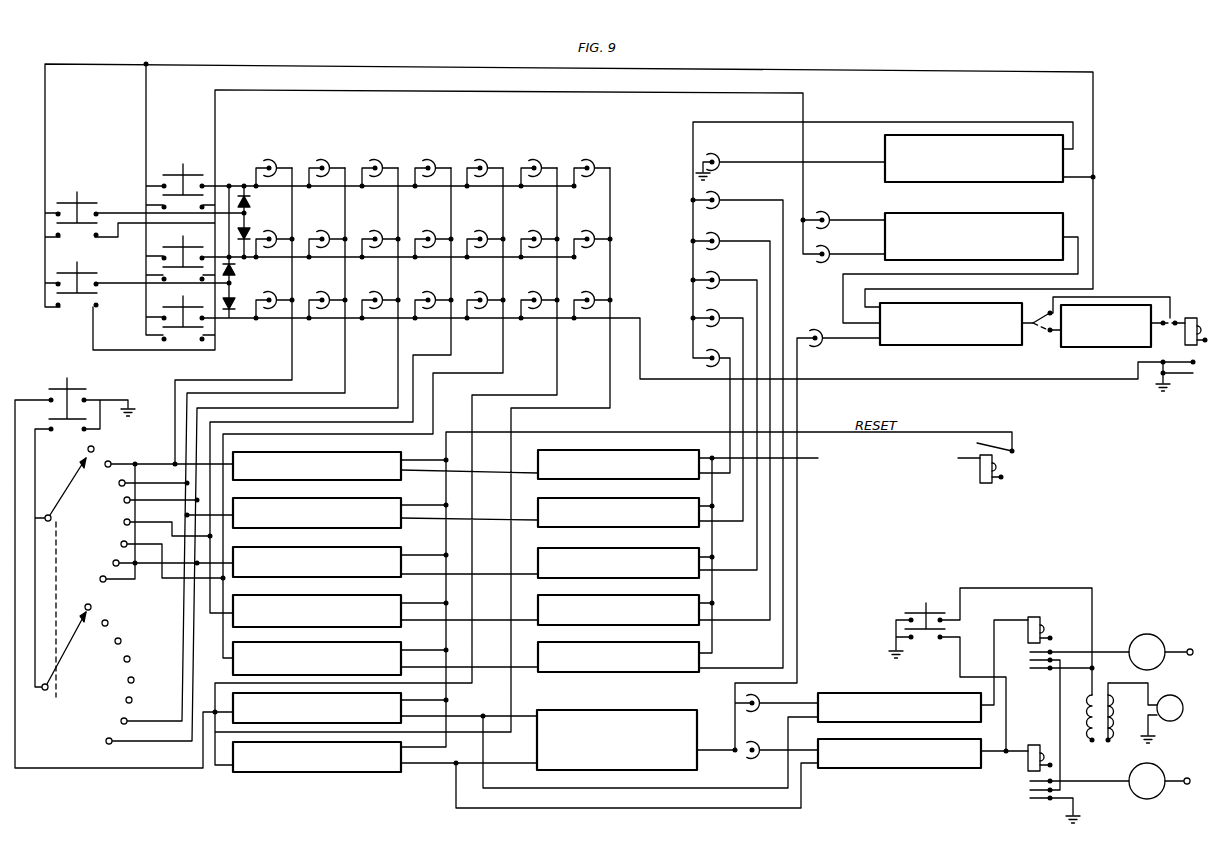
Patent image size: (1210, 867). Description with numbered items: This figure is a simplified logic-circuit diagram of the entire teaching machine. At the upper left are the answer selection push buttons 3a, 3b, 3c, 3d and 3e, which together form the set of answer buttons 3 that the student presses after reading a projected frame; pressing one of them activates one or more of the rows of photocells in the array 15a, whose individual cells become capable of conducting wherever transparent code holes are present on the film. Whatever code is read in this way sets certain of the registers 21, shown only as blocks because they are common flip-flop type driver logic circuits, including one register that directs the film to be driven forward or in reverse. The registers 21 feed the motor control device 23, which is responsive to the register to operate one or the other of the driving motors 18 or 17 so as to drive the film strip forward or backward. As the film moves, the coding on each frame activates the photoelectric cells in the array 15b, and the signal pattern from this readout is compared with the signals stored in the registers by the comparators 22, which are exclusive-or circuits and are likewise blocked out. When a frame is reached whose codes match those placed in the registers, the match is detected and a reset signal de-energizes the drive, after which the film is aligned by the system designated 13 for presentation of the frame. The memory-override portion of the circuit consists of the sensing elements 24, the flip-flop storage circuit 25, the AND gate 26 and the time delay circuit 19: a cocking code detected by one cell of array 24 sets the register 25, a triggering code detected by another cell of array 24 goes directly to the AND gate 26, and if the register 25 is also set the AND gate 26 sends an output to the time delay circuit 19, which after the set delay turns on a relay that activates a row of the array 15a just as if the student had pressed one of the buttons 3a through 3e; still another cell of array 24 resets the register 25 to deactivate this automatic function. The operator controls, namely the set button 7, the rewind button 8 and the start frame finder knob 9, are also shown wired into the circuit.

The answer selection push buttons 3 is at (1170, 708).
The answer selection push button 3a is at (178, 172).
The answer selection push button 3b is at (176, 246).
The answer selection push button 3c is at (176, 307).
The answer selection push button 3d is at (73, 198).
The answer selection push button 3e is at (74, 270).
The set button 7 is at (53, 383).
The rewind button 8 is at (915, 607).
The start frame finder knob 9 is at (65, 497).
The film aligning system 13 is at (562, 816).
The rows of sensing elements 15a is at (604, 148).
The additional sensing elements 15b is at (683, 195).
The driving motor 17 is at (1146, 632).
The driving motor 18 is at (1148, 801).
The time delay circuit 19 is at (1087, 349).
The register 21 is at (352, 449).
The comparator 22 is at (637, 448).
The motor control device 23 is at (862, 692).
The sensing elements 24 is at (816, 205).
The flip-flop storage circuit 25 is at (990, 211).
The AND gate 26 is at (940, 348).